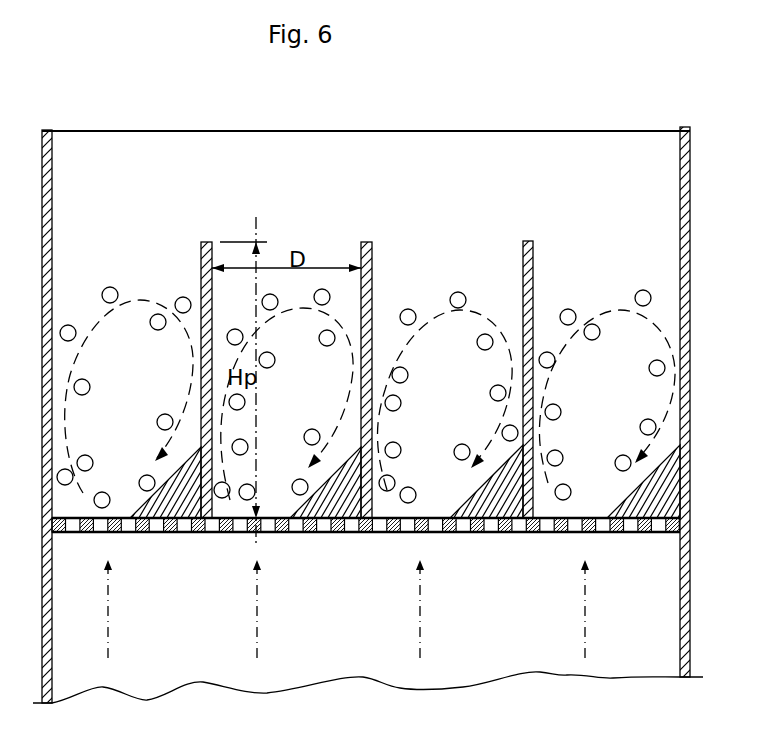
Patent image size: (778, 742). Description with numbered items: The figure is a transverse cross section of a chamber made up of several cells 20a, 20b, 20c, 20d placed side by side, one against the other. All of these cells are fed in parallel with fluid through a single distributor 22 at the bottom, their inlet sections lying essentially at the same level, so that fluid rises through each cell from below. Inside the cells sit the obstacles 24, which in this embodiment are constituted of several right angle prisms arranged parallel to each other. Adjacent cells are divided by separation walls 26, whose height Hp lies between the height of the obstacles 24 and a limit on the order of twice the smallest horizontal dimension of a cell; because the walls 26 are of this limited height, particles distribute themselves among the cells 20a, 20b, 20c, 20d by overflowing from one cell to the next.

The cell 20a is at (123, 282).
The cell 20b is at (307, 283).
The cell 20c is at (459, 283).
The cell 20d is at (612, 277).
The distributor 22 is at (290, 533).
The obstacles 24 is at (175, 502).
The separation wall 26 is at (202, 293).